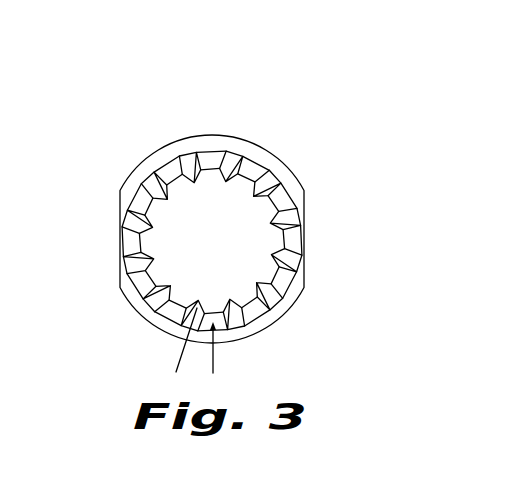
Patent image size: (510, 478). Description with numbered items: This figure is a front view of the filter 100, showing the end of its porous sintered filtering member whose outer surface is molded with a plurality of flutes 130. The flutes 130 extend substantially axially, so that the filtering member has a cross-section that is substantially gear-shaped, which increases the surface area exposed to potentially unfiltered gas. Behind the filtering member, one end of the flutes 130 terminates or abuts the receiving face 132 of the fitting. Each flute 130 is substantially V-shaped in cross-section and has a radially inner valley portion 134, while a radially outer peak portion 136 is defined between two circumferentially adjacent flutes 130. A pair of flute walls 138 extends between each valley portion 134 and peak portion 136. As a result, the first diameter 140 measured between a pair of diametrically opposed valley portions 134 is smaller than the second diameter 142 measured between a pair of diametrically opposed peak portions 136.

The filter 100 is at (126, 144).
The flutes 130 is at (283, 220).
The receiving face 132 is at (277, 172).
The valley portion 134 is at (290, 258).
The peak portion 136 is at (293, 237).
The flute walls 138 is at (293, 302).
The first diameter 140 is at (230, 170).
The second diameter 142 is at (210, 153).